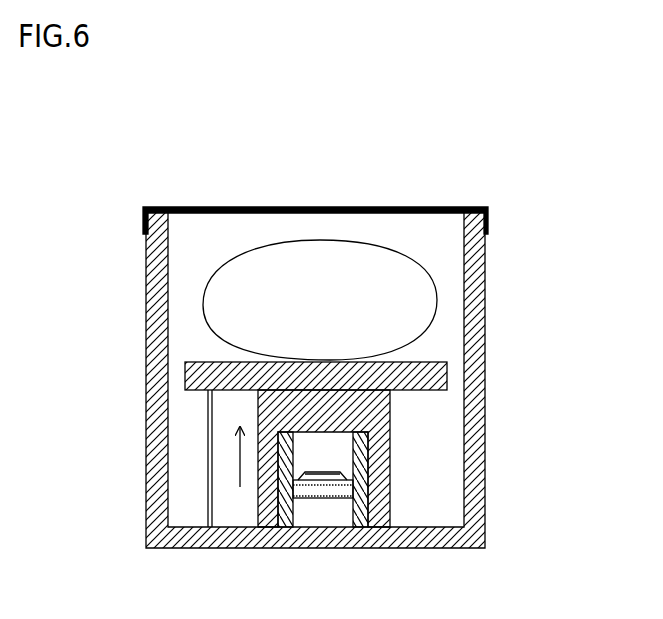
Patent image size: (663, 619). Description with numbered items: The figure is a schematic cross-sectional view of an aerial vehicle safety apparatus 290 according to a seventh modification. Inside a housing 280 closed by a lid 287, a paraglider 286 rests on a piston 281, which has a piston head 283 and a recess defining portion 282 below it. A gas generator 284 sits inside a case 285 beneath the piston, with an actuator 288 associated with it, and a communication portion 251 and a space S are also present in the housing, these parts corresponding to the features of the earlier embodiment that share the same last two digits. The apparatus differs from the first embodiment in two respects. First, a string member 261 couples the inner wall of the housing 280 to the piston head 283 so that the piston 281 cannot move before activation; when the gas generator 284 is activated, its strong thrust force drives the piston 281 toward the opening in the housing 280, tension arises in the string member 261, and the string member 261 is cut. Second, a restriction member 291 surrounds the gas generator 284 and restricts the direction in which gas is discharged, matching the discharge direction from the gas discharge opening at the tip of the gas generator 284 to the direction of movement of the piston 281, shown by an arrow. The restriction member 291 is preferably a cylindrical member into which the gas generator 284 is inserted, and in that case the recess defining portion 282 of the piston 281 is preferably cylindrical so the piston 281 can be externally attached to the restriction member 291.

The aerial vehicle safety apparatus 290 is at (127, 154).
The housing 280 is at (477, 275).
The lid 287 is at (413, 208).
The paraglider 286 is at (380, 296).
The piston head 283 is at (433, 377).
The recess defining portion 282 is at (390, 447).
The piston 281 is at (570, 365).
The restriction member 291 is at (288, 510).
The case 285 is at (338, 490).
The gas generator 284 is at (332, 512).
The actuator 288 is at (433, 487).
The string member 261 is at (208, 452).
The communication portion 251 is at (180, 375).
The space S is at (187, 500).